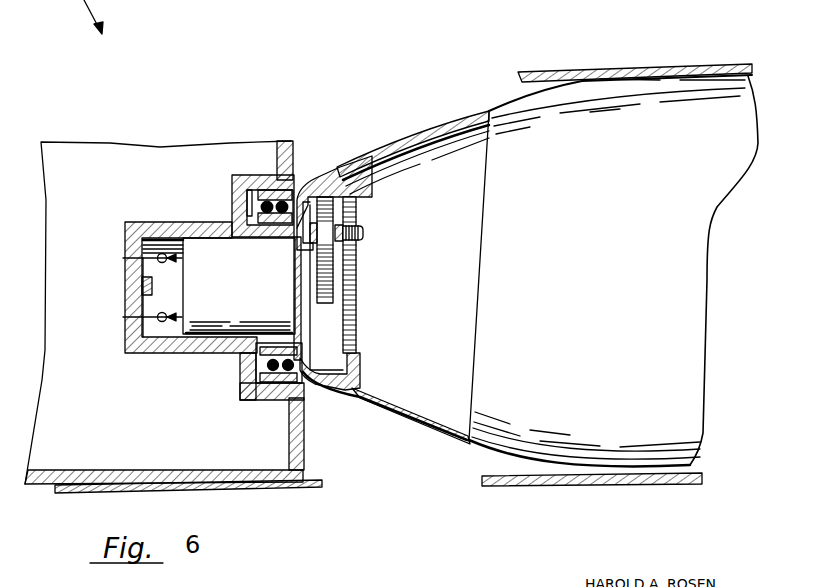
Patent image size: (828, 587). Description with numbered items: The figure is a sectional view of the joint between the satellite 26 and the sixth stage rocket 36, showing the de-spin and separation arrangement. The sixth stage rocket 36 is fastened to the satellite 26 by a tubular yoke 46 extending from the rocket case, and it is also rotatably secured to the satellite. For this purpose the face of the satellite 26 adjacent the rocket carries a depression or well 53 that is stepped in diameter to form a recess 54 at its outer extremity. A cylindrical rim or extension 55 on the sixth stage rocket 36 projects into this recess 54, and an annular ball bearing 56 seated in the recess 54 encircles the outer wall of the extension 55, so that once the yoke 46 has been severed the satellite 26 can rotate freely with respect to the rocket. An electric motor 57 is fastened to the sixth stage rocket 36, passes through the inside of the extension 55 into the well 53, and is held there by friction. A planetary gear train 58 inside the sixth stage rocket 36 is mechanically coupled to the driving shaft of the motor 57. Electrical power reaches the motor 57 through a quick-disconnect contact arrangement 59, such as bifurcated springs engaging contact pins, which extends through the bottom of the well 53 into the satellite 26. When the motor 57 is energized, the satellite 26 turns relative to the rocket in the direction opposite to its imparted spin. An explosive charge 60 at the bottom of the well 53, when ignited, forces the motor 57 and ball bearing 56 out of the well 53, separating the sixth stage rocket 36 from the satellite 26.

The satellite 26 is at (182, 155).
The sixth stage rocket 36 is at (481, 110).
The tubular yoke 46 is at (548, 71).
The well 53 is at (165, 335).
The recess 54 is at (261, 190).
The cylindrical extension 55 is at (247, 222).
The annular ball bearing 56 is at (304, 195).
The electric motor 57 is at (252, 292).
The planetary gear train 58 is at (357, 256).
The quick-disconnect contact arrangement 59 is at (160, 264).
The explosive charge 60 is at (142, 284).